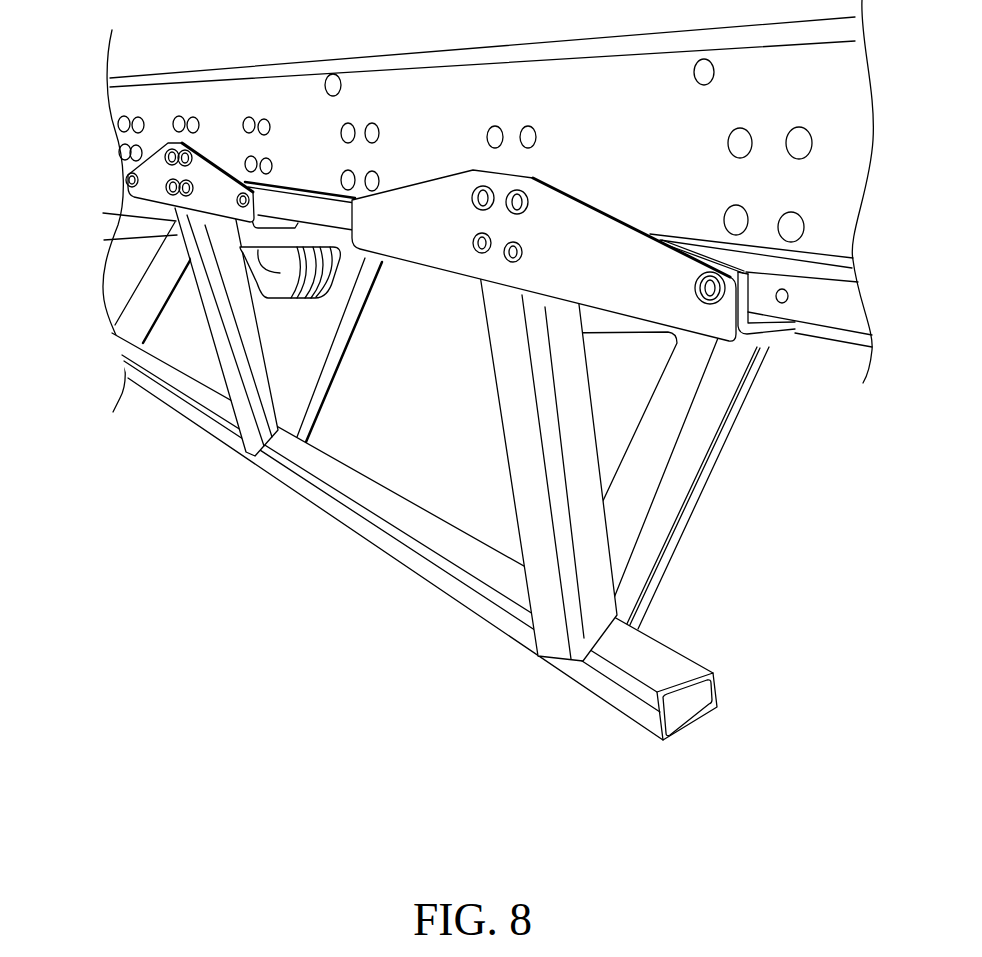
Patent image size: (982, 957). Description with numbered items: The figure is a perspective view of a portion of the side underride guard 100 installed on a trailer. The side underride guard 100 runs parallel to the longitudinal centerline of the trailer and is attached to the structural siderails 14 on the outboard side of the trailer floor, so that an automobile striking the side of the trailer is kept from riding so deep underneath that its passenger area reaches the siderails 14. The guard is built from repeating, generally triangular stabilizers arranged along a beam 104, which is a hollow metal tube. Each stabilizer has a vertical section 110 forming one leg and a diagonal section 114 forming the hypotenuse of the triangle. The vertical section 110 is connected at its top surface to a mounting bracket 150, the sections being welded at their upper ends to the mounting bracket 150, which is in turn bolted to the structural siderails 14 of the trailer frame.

The structural siderail 14 is at (192, 98).
The side underride guard 100 is at (492, 441).
The beam 104 is at (465, 597).
The vertical section 110 is at (513, 443).
The diagonal section 114 is at (683, 460).
The mounting bracket 150 is at (423, 242).